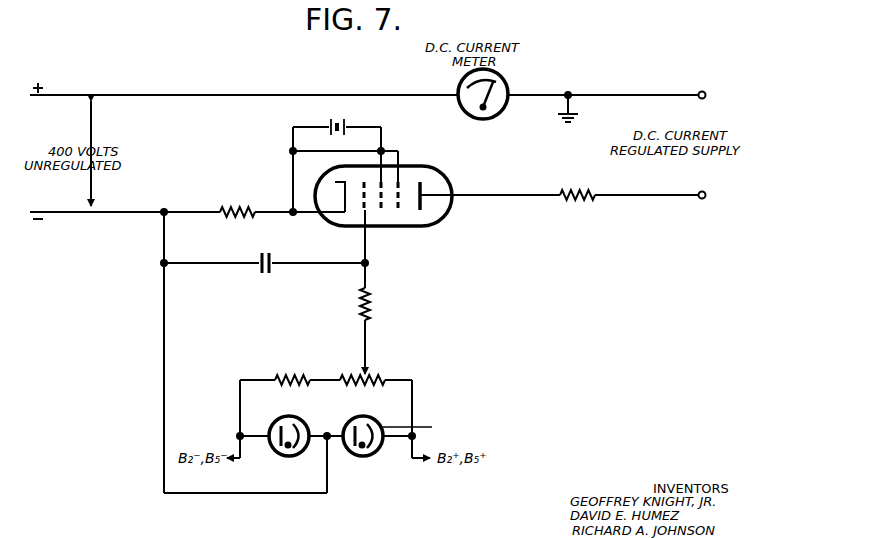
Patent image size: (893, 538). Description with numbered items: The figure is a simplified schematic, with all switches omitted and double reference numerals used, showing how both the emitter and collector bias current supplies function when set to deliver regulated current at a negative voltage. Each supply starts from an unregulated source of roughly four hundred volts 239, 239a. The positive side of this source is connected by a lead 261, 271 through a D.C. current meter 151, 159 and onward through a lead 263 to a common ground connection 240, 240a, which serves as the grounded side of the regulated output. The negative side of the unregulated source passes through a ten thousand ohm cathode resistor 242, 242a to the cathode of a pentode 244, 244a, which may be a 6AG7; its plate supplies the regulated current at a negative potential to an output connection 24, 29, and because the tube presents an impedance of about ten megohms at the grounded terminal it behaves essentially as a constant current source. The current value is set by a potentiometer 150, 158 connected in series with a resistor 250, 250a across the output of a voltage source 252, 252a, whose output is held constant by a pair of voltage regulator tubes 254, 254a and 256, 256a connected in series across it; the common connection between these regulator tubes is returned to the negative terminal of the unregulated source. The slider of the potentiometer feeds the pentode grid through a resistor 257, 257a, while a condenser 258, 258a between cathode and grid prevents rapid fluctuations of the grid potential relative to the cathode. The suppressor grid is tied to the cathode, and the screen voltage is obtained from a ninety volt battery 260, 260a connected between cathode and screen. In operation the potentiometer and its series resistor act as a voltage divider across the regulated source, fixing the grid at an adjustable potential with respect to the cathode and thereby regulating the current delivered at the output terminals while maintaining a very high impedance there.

The lead 261 is at (364, 83).
The positive supply conductor 271 is at (210, 94).
The unregulated source of voltage 239 is at (140, 153).
The unregulated source of voltage 239a is at (105, 139).
The battery 260 is at (360, 121).
The battery 260a is at (350, 128).
The meter 151 is at (516, 94).
The meter 159 is at (504, 88).
The lead 263 is at (600, 93).
The common ground connection 240 is at (725, 86).
The common ground connection 240a is at (699, 92).
The cathode resistor 242 is at (235, 199).
The cathode resistor 242a is at (231, 198).
The pentode 244 is at (416, 207).
The pentode 244a is at (432, 226).
The output connection 24 is at (713, 213).
The output connection 29 is at (702, 200).
The condenser 258 is at (275, 279).
The condenser 258a is at (264, 278).
The resistor 257 is at (408, 304).
The resistor 257a is at (372, 308).
The resistor 250 is at (274, 367).
The resistor 250a is at (287, 377).
The potentiometer 150 is at (394, 368).
The potentiometer 158 is at (378, 378).
The voltage regulator tube 254 is at (441, 435).
The voltage regulator tube 254a is at (441, 435).
The voltage regulator tube 256 is at (273, 454).
The voltage regulator tube 256a is at (283, 456).
The voltage source 252 is at (392, 460).
The voltage source 252a is at (344, 470).